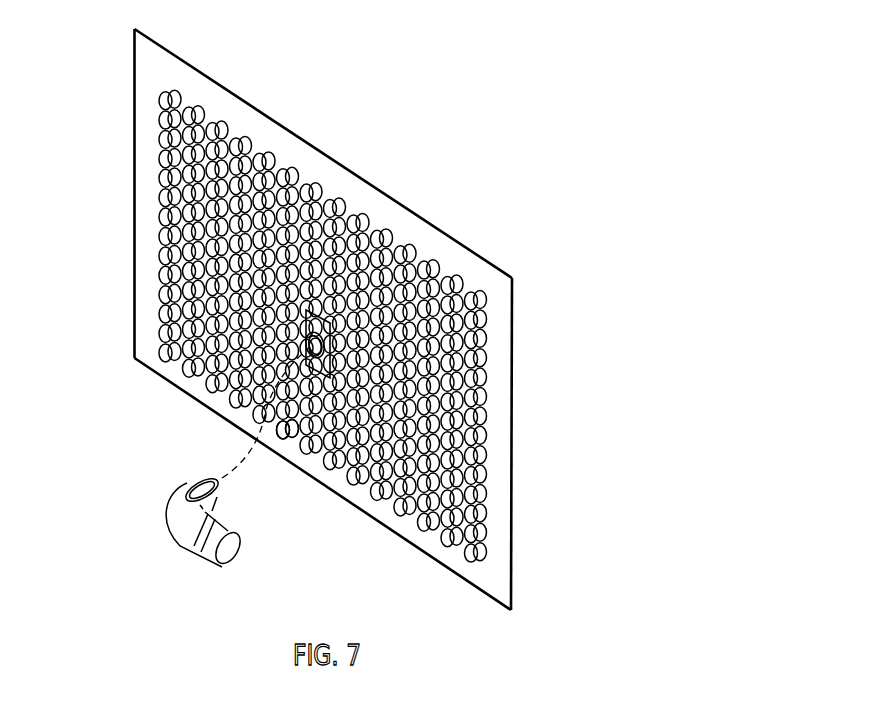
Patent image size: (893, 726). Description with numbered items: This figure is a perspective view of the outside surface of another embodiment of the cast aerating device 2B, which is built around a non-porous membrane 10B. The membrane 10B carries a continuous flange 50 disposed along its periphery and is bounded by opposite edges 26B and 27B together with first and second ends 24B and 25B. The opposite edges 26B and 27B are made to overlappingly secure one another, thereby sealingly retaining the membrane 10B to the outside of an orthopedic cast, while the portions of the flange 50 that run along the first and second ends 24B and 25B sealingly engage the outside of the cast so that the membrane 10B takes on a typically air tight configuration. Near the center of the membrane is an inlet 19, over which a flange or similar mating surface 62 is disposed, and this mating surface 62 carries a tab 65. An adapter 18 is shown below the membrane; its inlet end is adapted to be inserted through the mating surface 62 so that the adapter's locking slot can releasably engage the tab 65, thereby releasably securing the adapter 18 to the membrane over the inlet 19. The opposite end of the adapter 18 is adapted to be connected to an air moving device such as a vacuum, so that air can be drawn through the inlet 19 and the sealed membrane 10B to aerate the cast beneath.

The cast aerating device 2B is at (549, 206).
The non-porous membrane 10B is at (432, 216).
The opposite edge 27B is at (134, 179).
The second end 25B is at (340, 158).
The opposite edge 26B is at (514, 392).
The first end 24B is at (355, 508).
The continuous flange 50 is at (147, 124).
The tab 65 is at (308, 308).
The flange or mating surface 62 is at (299, 340).
The inlet 19 is at (282, 439).
The adapter 18 is at (235, 563).